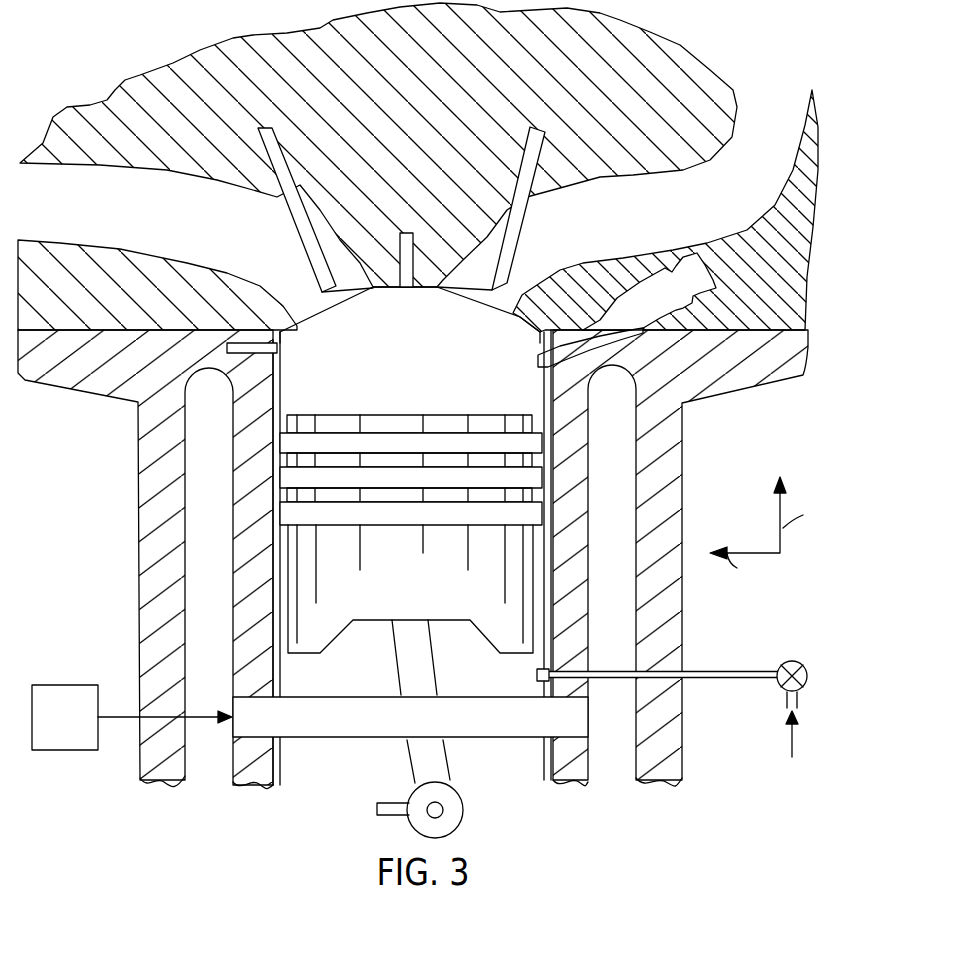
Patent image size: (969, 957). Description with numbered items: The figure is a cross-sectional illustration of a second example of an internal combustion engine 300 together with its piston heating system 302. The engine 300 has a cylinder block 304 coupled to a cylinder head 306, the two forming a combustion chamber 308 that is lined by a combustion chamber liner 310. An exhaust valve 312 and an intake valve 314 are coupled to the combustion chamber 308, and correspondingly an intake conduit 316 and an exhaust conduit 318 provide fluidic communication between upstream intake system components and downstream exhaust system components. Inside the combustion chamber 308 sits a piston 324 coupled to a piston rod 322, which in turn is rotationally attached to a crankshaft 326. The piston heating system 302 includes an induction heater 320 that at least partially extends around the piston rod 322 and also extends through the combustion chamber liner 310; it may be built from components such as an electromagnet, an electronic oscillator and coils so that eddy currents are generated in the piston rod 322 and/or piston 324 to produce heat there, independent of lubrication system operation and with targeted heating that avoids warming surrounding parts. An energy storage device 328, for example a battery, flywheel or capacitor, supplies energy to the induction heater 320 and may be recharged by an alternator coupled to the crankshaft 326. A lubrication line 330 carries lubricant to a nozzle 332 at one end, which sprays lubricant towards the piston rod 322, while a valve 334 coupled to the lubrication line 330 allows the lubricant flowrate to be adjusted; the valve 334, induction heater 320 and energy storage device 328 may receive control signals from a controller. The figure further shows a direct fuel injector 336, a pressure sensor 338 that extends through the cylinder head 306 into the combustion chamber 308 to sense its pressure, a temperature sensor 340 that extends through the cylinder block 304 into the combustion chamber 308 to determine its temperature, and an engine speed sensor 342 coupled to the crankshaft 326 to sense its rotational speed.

The internal combustion engine 300 is at (73, 74).
The piston heating system 302 is at (332, 771).
The cylinder block 304 is at (156, 352).
The cylinder head 306 is at (135, 308).
The combustion chamber 308 is at (393, 364).
The combustion chamber liner 310 is at (282, 385).
The exhaust valve 312 is at (513, 228).
The intake valve 314 is at (293, 228).
The intake conduit 316 is at (180, 229).
The exhaust conduit 318 is at (642, 225).
The induction heater 320 is at (338, 740).
The piston rod 322 is at (448, 758).
The piston 324 is at (393, 591).
The crankshaft 326 is at (467, 808).
The energy storage device 328 is at (45, 683).
The lubrication line 330 is at (695, 671).
The nozzle 332 is at (537, 674).
The valve 334 is at (788, 660).
The direct fuel injector 336 is at (637, 313).
The pressure sensor 338 is at (410, 231).
The temperature sensor 340 is at (227, 347).
The engine speed sensor 342 is at (389, 817).